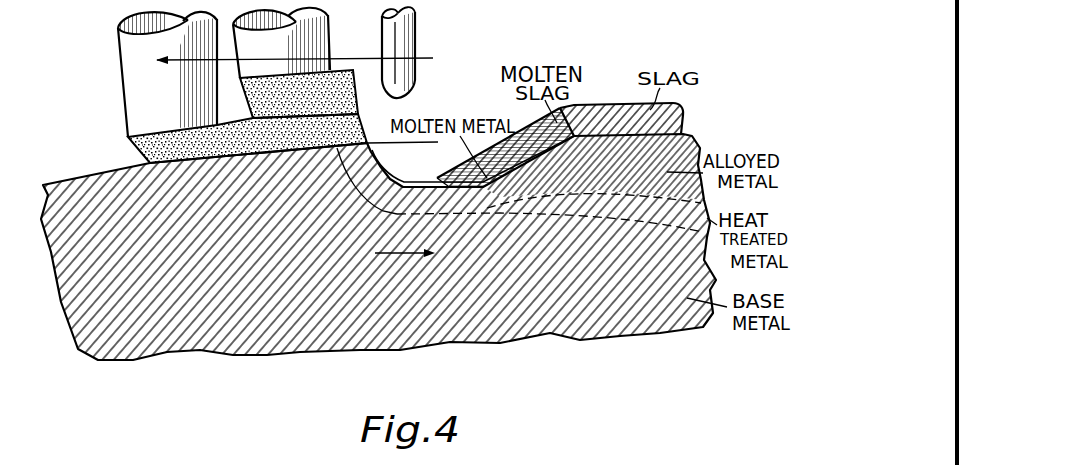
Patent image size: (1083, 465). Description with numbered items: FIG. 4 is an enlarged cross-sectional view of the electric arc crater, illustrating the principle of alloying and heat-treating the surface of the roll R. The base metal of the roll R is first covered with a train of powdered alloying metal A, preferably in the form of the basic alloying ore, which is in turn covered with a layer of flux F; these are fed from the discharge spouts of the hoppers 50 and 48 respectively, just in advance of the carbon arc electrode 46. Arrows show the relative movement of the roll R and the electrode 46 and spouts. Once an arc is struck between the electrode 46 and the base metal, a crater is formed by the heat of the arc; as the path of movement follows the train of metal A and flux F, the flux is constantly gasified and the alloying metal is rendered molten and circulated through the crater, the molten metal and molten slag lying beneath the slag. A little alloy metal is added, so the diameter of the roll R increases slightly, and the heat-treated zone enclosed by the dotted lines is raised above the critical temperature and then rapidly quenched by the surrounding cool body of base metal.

The hopper 50 is at (122, 64).
The hopper 48 is at (328, 35).
The carbon arc electrode 46 is at (417, 33).
The flux layer F is at (355, 90).
The alloying metal train A is at (128, 150).
The roll R is at (55, 210).